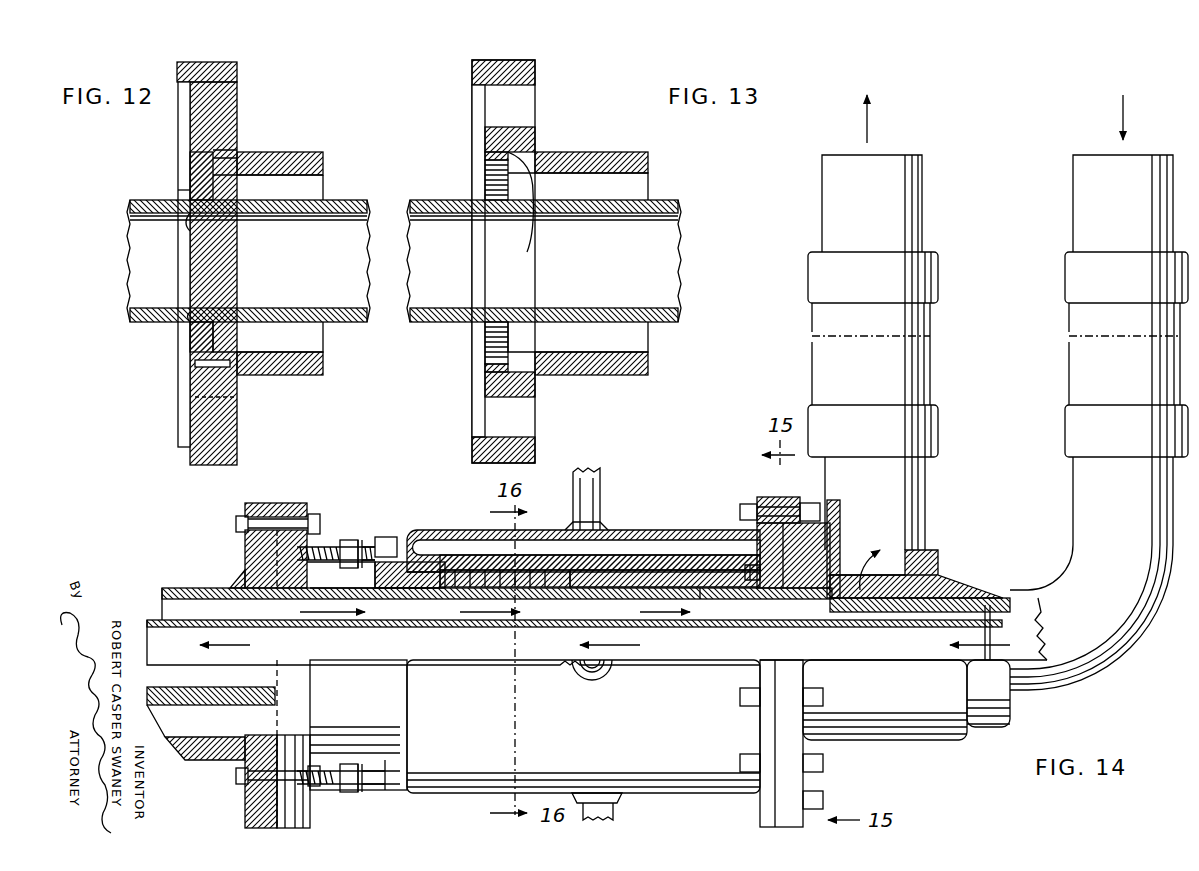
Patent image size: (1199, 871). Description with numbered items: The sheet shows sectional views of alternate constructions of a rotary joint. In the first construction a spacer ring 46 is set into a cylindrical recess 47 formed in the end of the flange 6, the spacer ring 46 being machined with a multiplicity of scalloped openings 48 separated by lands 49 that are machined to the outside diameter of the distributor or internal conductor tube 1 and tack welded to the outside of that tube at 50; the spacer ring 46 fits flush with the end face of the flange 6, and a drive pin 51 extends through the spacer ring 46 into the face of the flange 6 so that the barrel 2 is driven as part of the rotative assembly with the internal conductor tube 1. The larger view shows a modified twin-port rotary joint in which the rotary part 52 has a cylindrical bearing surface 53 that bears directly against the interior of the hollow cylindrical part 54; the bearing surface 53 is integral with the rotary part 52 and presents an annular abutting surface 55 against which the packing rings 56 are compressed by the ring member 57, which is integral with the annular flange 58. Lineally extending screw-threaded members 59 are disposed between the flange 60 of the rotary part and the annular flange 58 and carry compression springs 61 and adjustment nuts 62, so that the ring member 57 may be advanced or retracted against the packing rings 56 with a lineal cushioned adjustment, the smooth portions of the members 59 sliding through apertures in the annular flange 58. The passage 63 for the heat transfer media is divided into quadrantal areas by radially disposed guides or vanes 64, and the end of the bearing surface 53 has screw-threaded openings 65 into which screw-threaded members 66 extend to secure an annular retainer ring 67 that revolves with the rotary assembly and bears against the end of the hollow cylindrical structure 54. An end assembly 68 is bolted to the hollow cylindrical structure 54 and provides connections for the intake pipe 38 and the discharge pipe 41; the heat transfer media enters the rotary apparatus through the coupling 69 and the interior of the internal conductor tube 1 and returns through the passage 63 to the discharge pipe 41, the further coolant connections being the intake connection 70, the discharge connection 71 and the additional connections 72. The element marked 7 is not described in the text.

In FIG. 12, the distributor or internal conductor tube 1 is at (280, 232).
In FIG. 13, the distributor or internal conductor tube 1 is at (592, 232).
In FIG. 14, the distributor or internal conductor tube 1 is at (483, 633).
In FIG. 12, the barrel 2 is at (285, 168).
In FIG. 13, the barrel 2 is at (628, 165).
In FIG. 12, the flange 6 is at (237, 93).
In FIG. 13, the flange 6 is at (480, 73).
In FIG. 12, the lower flange 7 is at (300, 322).
In FIG. 13, the lower flange 7 is at (605, 322).
In FIG. 14, the intake pipe 38 is at (1073, 210).
In FIG. 14, the discharge pipe 41 is at (905, 205).
In FIG. 12, the spacer ring 46 is at (190, 165).
In FIG. 13, the spacer ring 46 is at (485, 156).
In FIG. 12, the cylindrical recess 47 is at (213, 153).
In FIG. 13, the cylindrical recess 47 is at (527, 204).
In FIG. 13, the scalloped openings 48 is at (485, 187).
In FIG. 12, the lands 49 is at (178, 193).
In FIG. 12, the tack weld 50 is at (195, 214).
In FIG. 12, the drive pin 51 is at (200, 368).
In FIG. 14, the rotary part 52 is at (340, 620).
In FIG. 14, the bearing surface 53 is at (592, 531).
In FIG. 14, the hollow cylindrical part 54 is at (700, 528).
In FIG. 14, the annular abutting surface 55 is at (628, 540).
In FIG. 14, the packing rings 56 is at (455, 555).
In FIG. 14, the ring member 57 is at (435, 640).
In FIG. 14, the annular flange 58 is at (388, 537).
In FIG. 14, the screw-threaded members 59 is at (320, 545).
In FIG. 14, the flange of the rotary part 60 is at (285, 503).
In FIG. 14, the compression springs 61 is at (367, 540).
In FIG. 14, the adjustment nuts 62 is at (350, 540).
In FIG. 14, the passage 63 is at (720, 650).
In FIG. 14, the guides or vanes 64 is at (400, 593).
In FIG. 14, the screw-threaded openings 65 is at (758, 590).
In FIG. 14, the screw-threaded members 66 is at (700, 600).
In FIG. 14, the annular retainer ring 67 is at (860, 555).
In FIG. 14, the end assembly 68 is at (925, 740).
In FIG. 14, the coupling 69 is at (215, 588).
In FIG. 14, the intake connection 70 is at (598, 482).
In FIG. 14, the discharge connection 71 is at (618, 808).
In FIG. 14, the additional connections 72 is at (593, 670).